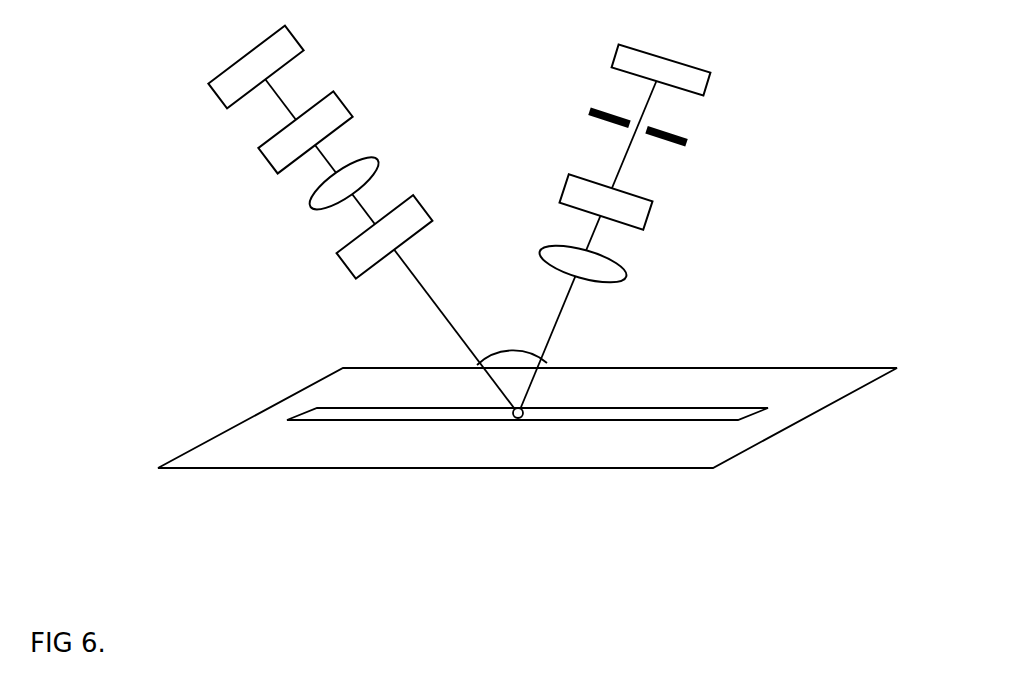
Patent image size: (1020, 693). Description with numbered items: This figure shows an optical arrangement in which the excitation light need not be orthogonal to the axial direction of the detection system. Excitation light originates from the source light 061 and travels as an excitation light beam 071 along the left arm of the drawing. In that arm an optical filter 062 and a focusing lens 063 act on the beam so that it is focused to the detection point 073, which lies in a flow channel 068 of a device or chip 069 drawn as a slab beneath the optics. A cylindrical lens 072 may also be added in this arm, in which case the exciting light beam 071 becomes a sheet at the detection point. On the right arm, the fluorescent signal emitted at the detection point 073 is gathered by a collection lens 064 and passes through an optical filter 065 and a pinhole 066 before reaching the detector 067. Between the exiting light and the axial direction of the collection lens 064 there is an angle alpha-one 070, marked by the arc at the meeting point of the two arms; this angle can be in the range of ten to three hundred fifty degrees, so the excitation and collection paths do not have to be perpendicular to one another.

The source light 061 is at (315, 43).
The optical filter 062 is at (265, 158).
The focusing lens 063 is at (390, 163).
The collection lens 064 is at (637, 283).
The optical filter 065 is at (678, 218).
The pinhole 066 is at (688, 152).
The detector 067 is at (715, 78).
The flow channel 068 is at (370, 410).
The chip 069 is at (743, 378).
The angle α1 070 is at (490, 337).
The excitation light beam 071 is at (427, 302).
The cylindrical lens 072 is at (328, 257).
The detection point 073 is at (507, 428).